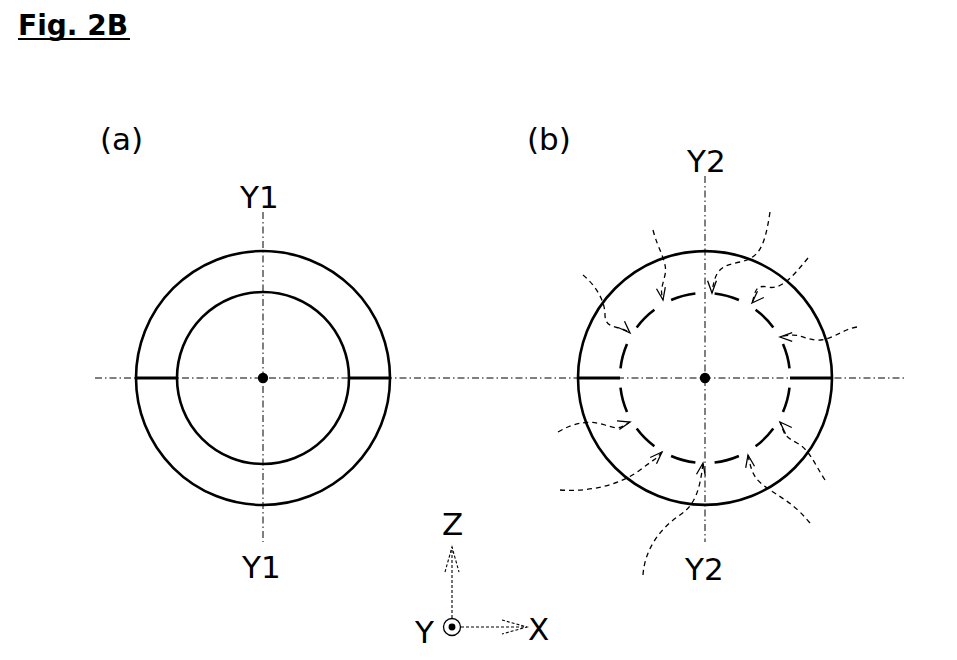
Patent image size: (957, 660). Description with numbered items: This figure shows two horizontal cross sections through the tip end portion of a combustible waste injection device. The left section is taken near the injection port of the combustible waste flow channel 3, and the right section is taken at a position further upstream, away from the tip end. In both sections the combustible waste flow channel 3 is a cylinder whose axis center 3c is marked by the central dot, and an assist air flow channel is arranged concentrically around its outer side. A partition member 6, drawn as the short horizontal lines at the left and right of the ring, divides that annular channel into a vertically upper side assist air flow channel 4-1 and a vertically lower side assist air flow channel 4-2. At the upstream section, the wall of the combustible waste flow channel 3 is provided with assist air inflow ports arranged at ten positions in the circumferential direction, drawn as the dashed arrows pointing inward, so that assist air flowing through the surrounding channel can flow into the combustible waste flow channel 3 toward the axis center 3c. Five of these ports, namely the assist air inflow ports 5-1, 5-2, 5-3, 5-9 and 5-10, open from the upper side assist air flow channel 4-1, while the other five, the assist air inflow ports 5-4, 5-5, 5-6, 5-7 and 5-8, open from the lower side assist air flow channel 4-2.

The combustible waste flow channel 3 is at (298, 337).
The axis center 3c is at (505, 401).
The vertically upper side assist air flow channel 4-1 is at (185, 305).
The vertically lower side assist air flow channel 4-2 is at (170, 433).
The partition member 6 is at (157, 377).
The assist air inflow port 5-1 is at (754, 233).
The assist air inflow port 5-2 is at (800, 261).
The assist air inflow port 5-3 is at (847, 322).
The assist air inflow port 5-4 is at (832, 473).
The assist air inflow port 5-5 is at (797, 511).
The assist air inflow port 5-6 is at (661, 540).
The assist air inflow port 5-7 is at (581, 479).
The assist air inflow port 5-8 is at (561, 436).
The assist air inflow port 5-9 is at (599, 288).
The assist air inflow port 5-10 is at (635, 243).